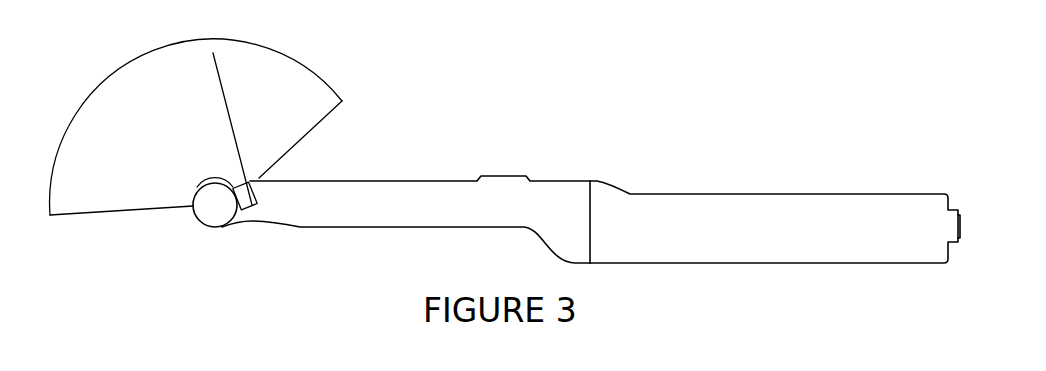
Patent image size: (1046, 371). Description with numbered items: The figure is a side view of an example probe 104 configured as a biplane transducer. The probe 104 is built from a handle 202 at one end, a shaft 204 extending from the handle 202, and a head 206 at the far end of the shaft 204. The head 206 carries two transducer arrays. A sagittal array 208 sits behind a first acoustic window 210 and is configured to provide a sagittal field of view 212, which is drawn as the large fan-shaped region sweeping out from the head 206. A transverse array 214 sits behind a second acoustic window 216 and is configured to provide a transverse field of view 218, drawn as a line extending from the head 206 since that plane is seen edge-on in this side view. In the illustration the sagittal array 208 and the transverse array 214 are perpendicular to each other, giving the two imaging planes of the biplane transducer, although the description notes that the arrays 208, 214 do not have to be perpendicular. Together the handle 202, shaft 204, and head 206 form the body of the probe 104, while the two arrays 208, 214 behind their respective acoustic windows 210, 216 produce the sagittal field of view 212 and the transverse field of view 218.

The probe 104 is at (807, 63).
The handle 202 is at (713, 193).
The shaft 204 is at (395, 181).
The head 206 is at (197, 219).
The sagittal array 208 is at (194, 193).
The first acoustic window 210 is at (213, 182).
The sagittal field of view 212 is at (336, 95).
The transverse array 214 is at (258, 182).
The second acoustic window 216 is at (262, 200).
The transverse field of view 218 is at (230, 106).